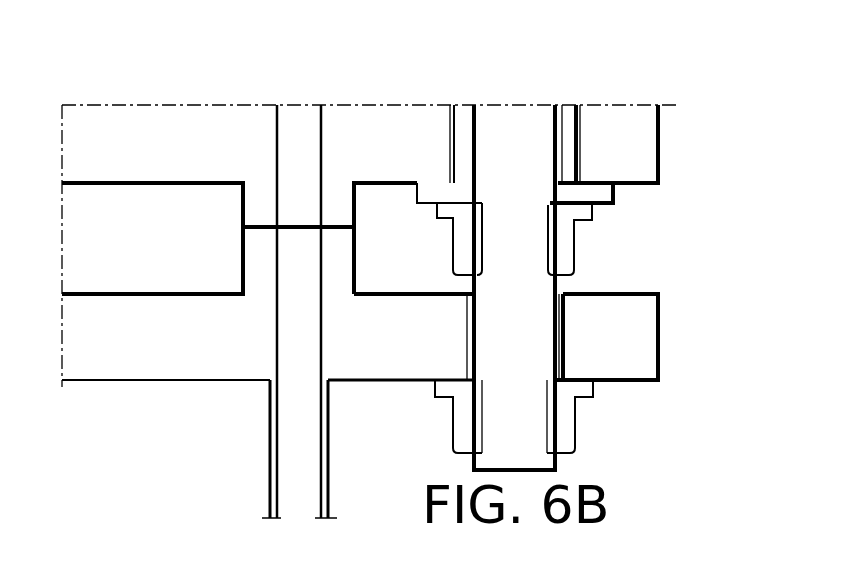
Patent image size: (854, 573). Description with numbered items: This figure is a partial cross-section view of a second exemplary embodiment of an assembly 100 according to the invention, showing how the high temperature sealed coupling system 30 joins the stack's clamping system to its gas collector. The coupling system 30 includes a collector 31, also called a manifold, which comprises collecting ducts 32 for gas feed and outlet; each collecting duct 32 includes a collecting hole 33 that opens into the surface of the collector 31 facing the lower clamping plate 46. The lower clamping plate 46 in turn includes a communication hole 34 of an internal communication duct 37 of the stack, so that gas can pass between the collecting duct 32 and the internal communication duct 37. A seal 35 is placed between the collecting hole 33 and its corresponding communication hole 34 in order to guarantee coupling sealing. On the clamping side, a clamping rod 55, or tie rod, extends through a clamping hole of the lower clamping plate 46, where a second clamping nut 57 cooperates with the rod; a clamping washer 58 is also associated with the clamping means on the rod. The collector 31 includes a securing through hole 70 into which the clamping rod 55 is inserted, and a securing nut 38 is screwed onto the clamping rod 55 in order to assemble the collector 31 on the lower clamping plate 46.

The assembly 100 is at (672, 67).
The high temperature sealed coupling system 30 is at (698, 332).
The collector 31 is at (623, 368).
The collecting duct 32 is at (293, 447).
The collecting hole 33 is at (275, 224).
The communication hole 34 is at (293, 230).
The seal 35 is at (293, 230).
The internal communication duct 37 is at (282, 143).
The securing nut 38 is at (562, 425).
The lower clamping plate 46 is at (635, 135).
The clamping rod 55 is at (533, 285).
The second clamping nut 57 is at (565, 245).
The clamping washer 58 is at (598, 192).
The securing through hole 70 is at (563, 332).